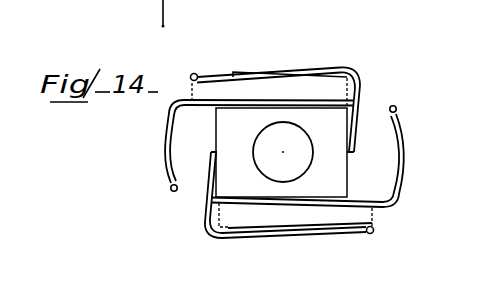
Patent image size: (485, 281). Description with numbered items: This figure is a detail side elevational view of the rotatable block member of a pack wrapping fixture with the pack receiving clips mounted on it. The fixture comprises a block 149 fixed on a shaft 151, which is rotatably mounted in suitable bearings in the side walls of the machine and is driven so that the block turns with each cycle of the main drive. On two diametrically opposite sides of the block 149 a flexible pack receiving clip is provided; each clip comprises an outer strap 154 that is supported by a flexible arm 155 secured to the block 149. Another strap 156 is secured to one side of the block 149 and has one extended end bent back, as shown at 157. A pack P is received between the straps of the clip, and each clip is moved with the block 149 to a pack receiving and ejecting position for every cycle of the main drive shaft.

The block 149 is at (215, 142).
The shaft 151 is at (313, 147).
The outer strap 154 is at (212, 73).
The flexible arm 155 is at (359, 70).
The strap 156 is at (205, 105).
The bent back end 157 is at (164, 145).
The plate P is at (267, 93).